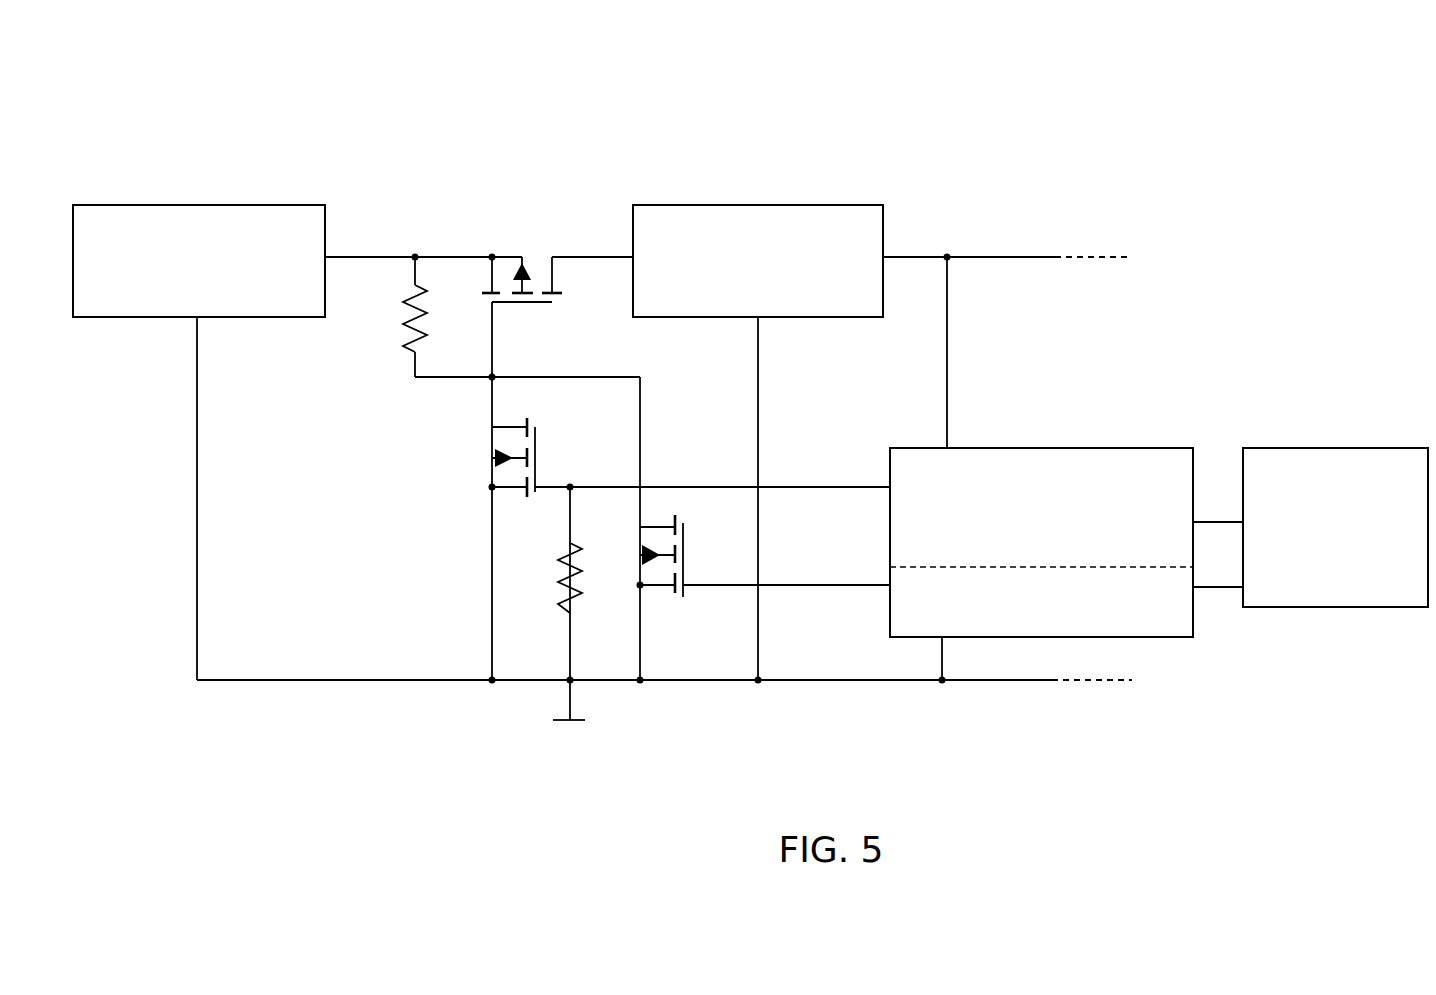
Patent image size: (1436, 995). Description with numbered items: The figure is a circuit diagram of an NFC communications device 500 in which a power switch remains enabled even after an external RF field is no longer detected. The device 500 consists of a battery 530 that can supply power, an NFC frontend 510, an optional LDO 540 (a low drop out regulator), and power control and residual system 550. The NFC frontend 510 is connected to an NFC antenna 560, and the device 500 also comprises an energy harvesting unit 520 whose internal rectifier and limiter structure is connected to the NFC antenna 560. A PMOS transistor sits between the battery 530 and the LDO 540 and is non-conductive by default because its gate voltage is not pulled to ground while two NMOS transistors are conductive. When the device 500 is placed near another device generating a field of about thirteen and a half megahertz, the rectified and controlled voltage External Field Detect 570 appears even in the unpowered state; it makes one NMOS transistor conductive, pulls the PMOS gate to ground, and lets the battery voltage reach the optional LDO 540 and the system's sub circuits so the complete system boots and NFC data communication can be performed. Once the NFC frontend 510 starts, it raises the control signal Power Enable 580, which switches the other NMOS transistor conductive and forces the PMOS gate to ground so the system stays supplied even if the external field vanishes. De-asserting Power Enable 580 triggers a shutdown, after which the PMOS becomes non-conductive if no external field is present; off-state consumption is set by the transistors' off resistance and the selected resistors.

The NFC communications device 500 is at (162, 67).
The NFC frontend 510 is at (1041, 542).
The energy harvesting unit 520 is at (1041, 600).
The battery 530 is at (199, 261).
The LDO 540 is at (758, 261).
The residual system 550 is at (1120, 235).
The NFC antenna 560 is at (1335, 527).
The External Field Detect 570 is at (824, 560).
The Power Enable 580 is at (824, 458).